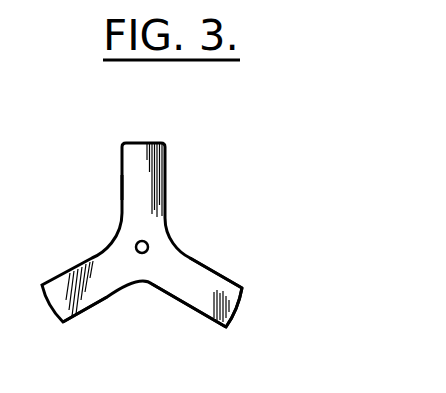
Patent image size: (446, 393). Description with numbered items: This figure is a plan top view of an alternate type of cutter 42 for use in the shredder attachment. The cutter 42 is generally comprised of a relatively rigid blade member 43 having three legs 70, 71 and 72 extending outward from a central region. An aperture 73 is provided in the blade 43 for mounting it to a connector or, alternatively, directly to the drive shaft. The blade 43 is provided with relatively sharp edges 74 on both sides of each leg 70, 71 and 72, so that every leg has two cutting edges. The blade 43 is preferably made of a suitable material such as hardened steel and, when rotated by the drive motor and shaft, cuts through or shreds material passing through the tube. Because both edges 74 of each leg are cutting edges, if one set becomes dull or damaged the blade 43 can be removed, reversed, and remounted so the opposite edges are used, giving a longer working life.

The cutter 42 is at (229, 301).
The blade member 43 is at (132, 163).
The leg 70 is at (222, 288).
The leg 71 is at (165, 148).
The leg 72 is at (75, 320).
The aperture 73 is at (148, 242).
The edges 74 is at (122, 188).